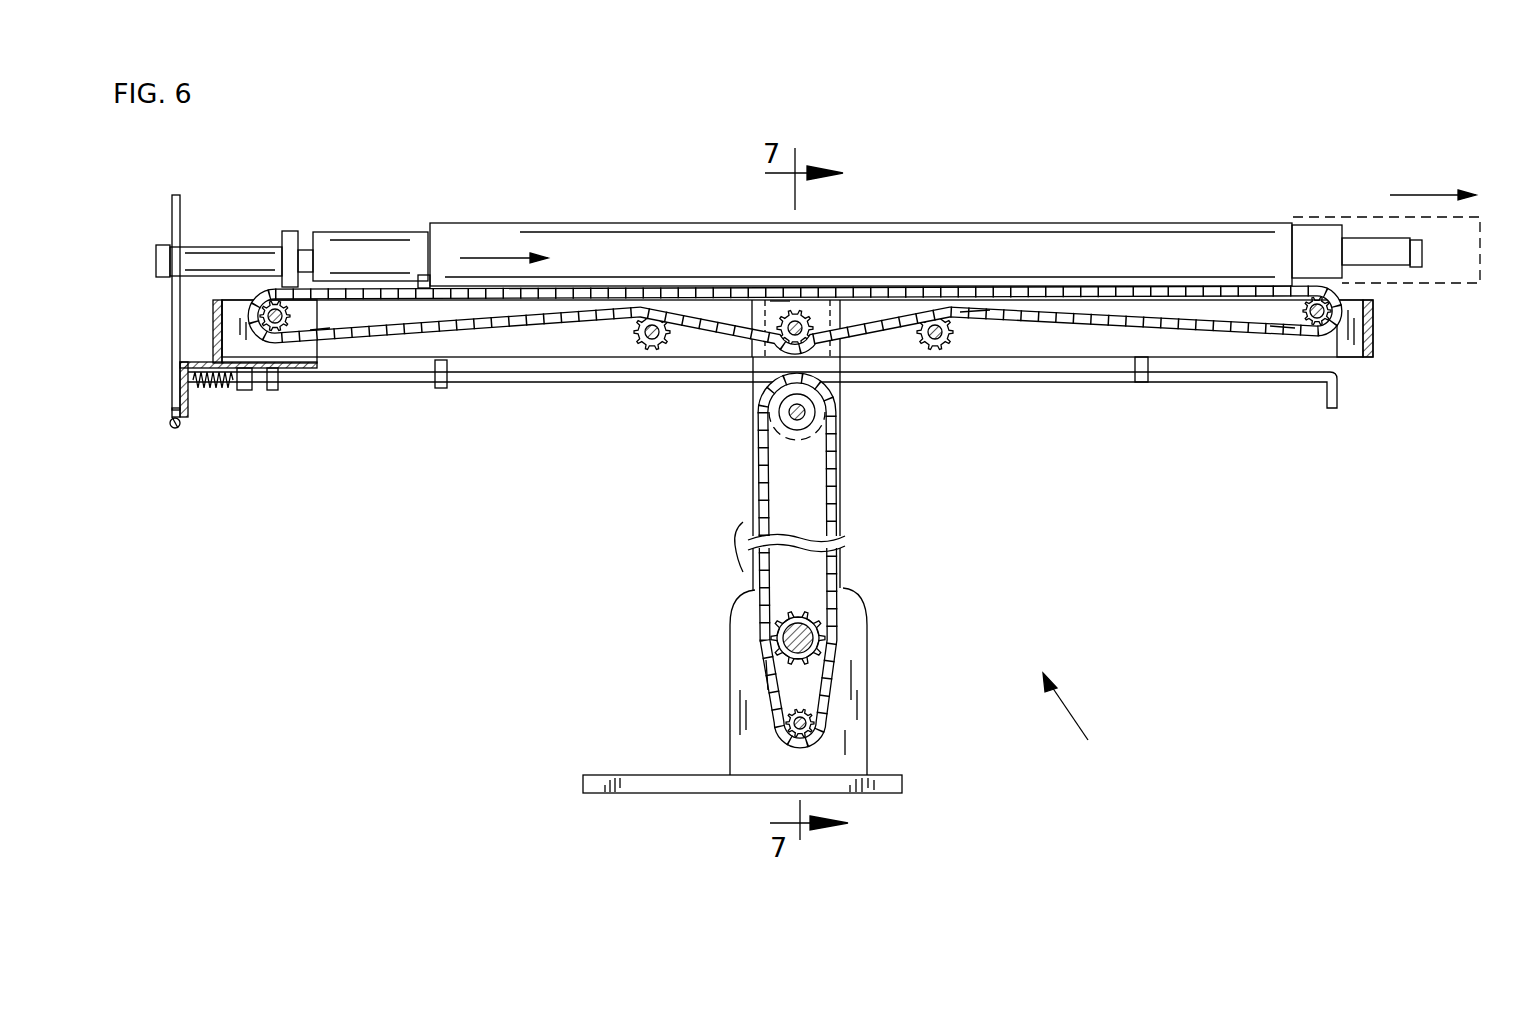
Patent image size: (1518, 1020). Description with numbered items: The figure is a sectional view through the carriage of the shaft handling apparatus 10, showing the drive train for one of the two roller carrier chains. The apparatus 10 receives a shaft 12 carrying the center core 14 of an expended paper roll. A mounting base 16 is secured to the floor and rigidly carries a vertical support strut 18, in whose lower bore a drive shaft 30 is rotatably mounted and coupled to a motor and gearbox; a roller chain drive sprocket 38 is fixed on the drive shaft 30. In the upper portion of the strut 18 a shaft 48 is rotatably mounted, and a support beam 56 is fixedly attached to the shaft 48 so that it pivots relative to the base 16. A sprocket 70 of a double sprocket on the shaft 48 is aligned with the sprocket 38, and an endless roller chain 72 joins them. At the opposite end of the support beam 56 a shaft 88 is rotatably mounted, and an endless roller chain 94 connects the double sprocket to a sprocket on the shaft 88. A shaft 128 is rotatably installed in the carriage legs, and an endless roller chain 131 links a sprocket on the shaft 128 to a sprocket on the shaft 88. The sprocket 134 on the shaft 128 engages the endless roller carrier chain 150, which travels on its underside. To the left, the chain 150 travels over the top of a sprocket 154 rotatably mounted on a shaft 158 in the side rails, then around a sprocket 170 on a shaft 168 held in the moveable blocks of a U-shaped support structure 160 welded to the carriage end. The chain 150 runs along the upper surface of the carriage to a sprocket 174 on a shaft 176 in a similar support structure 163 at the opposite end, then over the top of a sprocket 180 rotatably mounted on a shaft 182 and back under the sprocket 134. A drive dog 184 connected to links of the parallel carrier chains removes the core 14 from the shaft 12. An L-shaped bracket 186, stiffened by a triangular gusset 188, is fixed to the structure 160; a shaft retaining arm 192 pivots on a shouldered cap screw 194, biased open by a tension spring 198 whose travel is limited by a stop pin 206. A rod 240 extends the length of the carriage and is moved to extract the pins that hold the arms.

The shaft handling apparatus 10 is at (1075, 723).
The shaft 12 is at (258, 246).
The center core 14 is at (568, 222).
The mounting base 16 is at (610, 775).
The vertical support strut 18 is at (867, 690).
The drive shaft 30 is at (778, 732).
The roller chain drive sprocket 38 is at (808, 695).
The shaft 48 is at (772, 637).
The support beam 56 is at (842, 512).
The sprocket 70 is at (770, 676).
The endless roller chain 72 is at (778, 693).
The shaft 88 is at (797, 415).
The endless roller chain 94 is at (837, 478).
The shaft 128 is at (820, 302).
The endless roller chain 131 is at (842, 355).
The sprocket 134 is at (770, 301).
The roller carrier chain 150 is at (710, 333).
The sprocket 154 is at (632, 345).
The shaft 158 is at (662, 350).
The support structure 160 is at (212, 320).
The support structure 163 is at (1375, 322).
The shaft 168 is at (278, 323).
The sprocket 170 is at (330, 325).
The sprocket 174 is at (1293, 313).
The shaft 176 is at (1313, 316).
The sprocket 180 is at (968, 340).
The shaft 182 is at (933, 350).
The drive dog 184 is at (420, 286).
The L-shaped bracket 186 is at (186, 416).
The triangular gusset 188 is at (212, 388).
The shaft retaining arm 192 is at (172, 222).
The shouldered cap screw 194 is at (172, 400).
The tension spring 198 is at (173, 428).
The stop pin 206 is at (170, 423).
The rod 240 is at (487, 384).